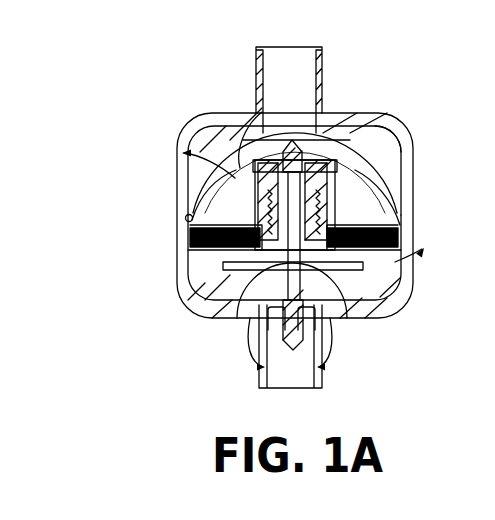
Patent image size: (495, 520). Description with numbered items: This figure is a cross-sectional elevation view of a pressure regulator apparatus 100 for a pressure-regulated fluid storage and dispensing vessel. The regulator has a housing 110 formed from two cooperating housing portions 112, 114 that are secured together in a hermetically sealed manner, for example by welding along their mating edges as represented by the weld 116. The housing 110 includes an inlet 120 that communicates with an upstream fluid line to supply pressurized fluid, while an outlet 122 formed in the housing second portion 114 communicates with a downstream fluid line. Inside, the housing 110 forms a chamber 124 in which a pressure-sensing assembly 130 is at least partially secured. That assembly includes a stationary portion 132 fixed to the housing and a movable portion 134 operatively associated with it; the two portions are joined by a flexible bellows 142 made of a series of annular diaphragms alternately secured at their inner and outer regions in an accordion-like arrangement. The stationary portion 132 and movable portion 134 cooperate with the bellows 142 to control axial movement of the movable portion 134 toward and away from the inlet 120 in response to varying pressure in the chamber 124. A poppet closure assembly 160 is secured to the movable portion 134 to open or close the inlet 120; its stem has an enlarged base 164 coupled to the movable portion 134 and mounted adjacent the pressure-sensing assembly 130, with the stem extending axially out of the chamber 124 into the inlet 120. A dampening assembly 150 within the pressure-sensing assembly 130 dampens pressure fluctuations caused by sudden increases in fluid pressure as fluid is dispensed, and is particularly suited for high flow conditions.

The pressure regulator apparatus 100 is at (277, 213).
The housing 110 is at (388, 112).
The housing portion 112 is at (177, 272).
The housing second portion 114 is at (186, 152).
The weld 116 is at (185, 218).
The inlet 120 is at (322, 388).
The outlet 122 is at (325, 45).
The chamber 124 is at (208, 295).
The pressure-sensing assembly 130 is at (375, 158).
The stationary portion 132 is at (411, 204).
The movable portion 134 is at (195, 305).
The bellows 142 is at (395, 272).
The dampening assembly 150 is at (235, 164).
The poppet closure assembly 160 is at (325, 310).
The enlarged base 164 is at (258, 272).